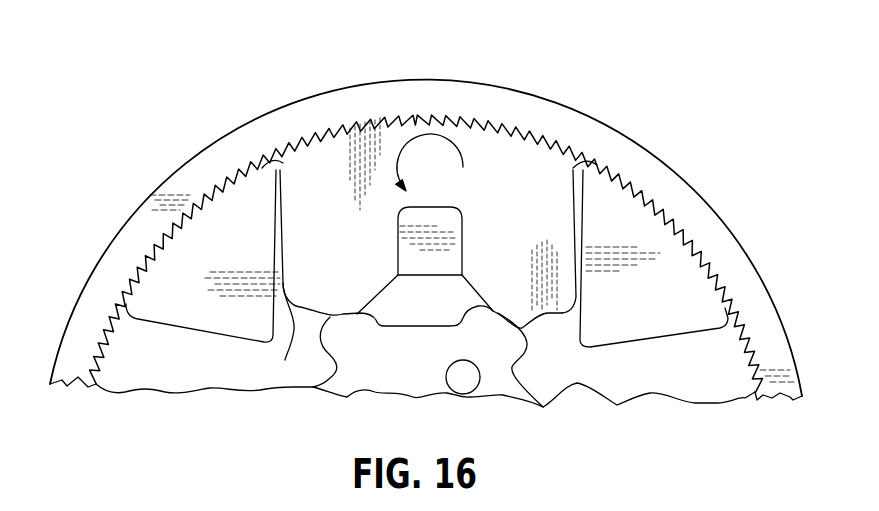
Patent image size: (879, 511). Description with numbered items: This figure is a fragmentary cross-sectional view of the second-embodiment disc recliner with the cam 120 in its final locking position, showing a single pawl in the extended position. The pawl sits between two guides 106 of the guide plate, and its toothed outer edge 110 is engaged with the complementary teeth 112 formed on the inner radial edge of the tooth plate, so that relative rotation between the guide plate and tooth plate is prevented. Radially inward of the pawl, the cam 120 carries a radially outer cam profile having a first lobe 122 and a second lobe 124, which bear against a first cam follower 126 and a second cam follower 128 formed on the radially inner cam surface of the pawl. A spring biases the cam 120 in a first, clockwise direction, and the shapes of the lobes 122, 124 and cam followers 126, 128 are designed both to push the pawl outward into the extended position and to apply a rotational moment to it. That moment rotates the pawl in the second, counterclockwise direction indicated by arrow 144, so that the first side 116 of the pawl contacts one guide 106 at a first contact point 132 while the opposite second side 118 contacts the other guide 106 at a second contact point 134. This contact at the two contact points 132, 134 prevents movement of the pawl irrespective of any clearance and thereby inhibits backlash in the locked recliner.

The guides 106 is at (185, 253).
The toothed outer edge 110 is at (332, 138).
The teeth 112 is at (102, 337).
The first side 116 is at (592, 166).
The second side 118 is at (285, 360).
The cam 120 is at (422, 385).
The first lobe 122 is at (498, 328).
The second lobe 124 is at (348, 328).
The first cam follower 126 is at (507, 312).
The second cam follower 128 is at (340, 310).
The first contact point 132 is at (578, 297).
The second contact point 134 is at (270, 172).
The arrow 144 is at (440, 132).